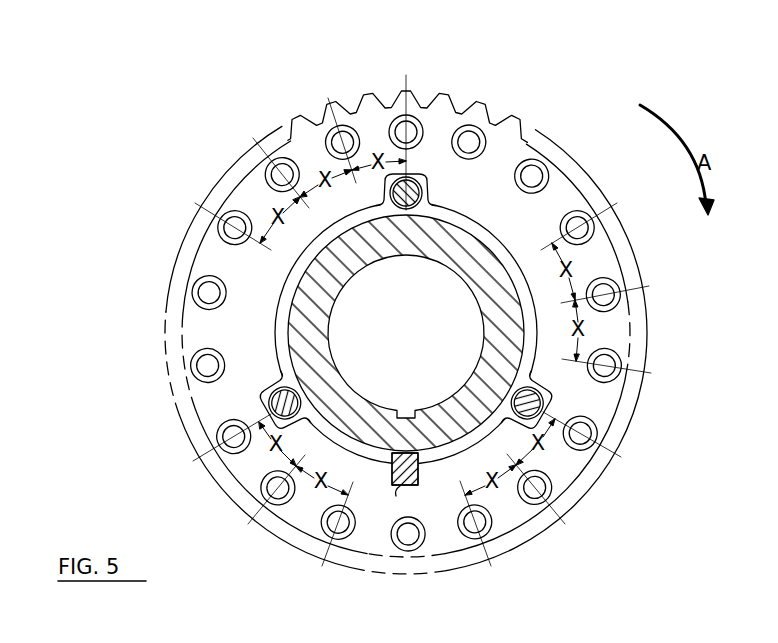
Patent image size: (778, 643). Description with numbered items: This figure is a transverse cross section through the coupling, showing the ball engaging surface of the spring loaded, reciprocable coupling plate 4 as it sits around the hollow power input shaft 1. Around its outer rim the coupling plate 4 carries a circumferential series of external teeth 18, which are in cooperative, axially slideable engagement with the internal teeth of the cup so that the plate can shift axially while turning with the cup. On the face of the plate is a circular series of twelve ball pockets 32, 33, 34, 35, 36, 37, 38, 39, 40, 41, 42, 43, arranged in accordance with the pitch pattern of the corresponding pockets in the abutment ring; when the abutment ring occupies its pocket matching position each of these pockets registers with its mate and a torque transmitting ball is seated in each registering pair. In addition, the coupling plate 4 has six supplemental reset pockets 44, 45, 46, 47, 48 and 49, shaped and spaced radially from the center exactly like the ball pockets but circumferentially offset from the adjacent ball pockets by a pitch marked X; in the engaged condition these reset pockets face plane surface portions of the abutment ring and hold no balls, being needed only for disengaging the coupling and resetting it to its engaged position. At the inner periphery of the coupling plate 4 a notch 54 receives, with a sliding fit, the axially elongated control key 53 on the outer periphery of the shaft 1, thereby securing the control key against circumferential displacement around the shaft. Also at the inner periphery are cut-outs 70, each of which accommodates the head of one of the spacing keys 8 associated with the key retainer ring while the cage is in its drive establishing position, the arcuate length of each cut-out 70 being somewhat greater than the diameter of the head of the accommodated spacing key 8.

The hollow power input shaft 1 is at (330, 319).
The reciprocable coupling plate 4 is at (531, 130).
The spacing key 8 is at (414, 181).
The external teeth 18 is at (404, 90).
The ball pocket 32 is at (415, 115).
The ball pocket 33 is at (481, 121).
The ball pocket 34 is at (547, 167).
The ball pocket 35 is at (590, 212).
The ball pocket 36 is at (620, 361).
The ball pocket 37 is at (596, 432).
The ball pocket 38 is at (488, 533).
The ball pocket 39 is at (324, 533).
The ball pocket 40 is at (218, 435).
The ball pocket 41 is at (193, 364).
The ball pocket 42 is at (193, 293).
The ball pocket 43 is at (218, 232).
The reset pocket 44 is at (615, 290).
The reset pocket 45 is at (550, 496).
The reset pocket 46 is at (419, 547).
The reset pocket 47 is at (262, 491).
The reset pocket 48 is at (333, 128).
The reset pocket 49 is at (265, 166).
The control key 53 is at (394, 488).
The notch 54 is at (418, 470).
The cut-out 70 is at (432, 191).